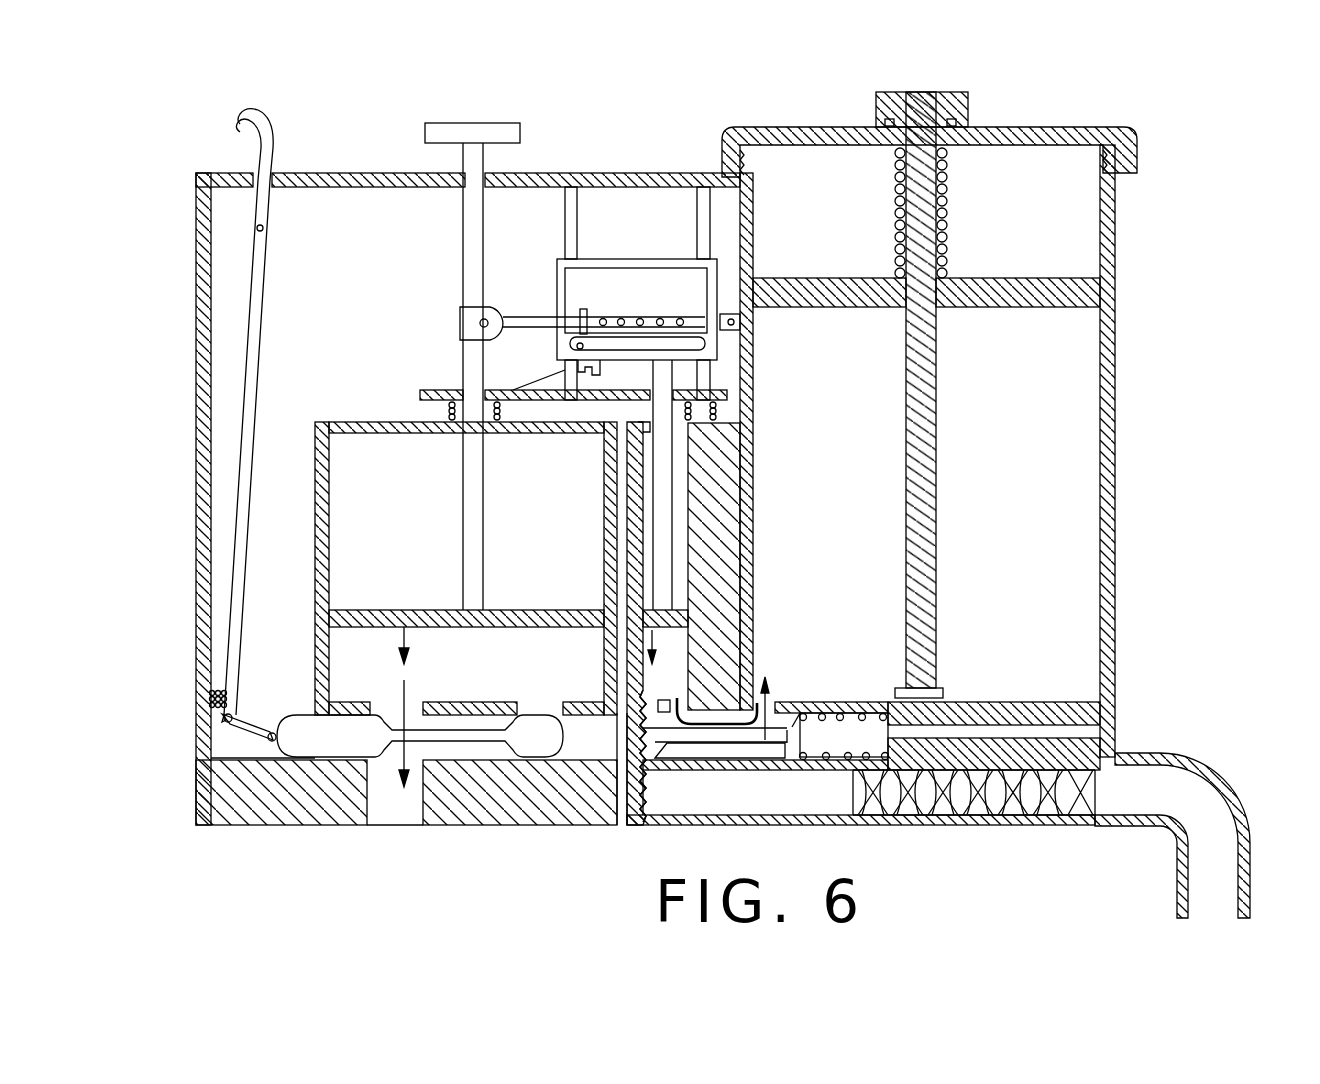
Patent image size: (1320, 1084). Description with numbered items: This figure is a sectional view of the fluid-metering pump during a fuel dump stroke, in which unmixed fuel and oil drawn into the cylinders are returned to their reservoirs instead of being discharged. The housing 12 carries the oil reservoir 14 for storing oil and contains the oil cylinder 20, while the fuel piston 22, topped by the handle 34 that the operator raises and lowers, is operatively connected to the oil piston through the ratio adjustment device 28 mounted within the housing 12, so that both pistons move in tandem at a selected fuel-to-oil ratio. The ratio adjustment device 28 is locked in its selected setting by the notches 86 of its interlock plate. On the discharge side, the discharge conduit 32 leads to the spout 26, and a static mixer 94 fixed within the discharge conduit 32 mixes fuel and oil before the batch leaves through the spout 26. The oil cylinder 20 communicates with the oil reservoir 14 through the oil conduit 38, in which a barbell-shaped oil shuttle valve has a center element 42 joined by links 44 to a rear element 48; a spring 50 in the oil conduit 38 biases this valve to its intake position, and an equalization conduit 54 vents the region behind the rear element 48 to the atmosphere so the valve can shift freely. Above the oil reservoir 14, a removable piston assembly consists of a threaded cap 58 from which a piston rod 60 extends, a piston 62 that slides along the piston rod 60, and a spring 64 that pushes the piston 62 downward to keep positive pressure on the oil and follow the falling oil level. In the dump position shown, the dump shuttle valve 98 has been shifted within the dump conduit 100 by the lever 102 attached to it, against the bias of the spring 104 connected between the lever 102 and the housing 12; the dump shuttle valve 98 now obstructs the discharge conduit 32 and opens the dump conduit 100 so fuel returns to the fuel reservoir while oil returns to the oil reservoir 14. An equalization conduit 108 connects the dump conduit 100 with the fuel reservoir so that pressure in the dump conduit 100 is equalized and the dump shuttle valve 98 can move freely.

The housing 12 is at (553, 540).
The oil reservoir 14 is at (438, 614).
The oil cylinder 20 is at (682, 677).
The fuel piston 22 is at (472, 495).
The spout 26 is at (1205, 905).
The ratio adjustment device 28 is at (612, 258).
The discharge conduit 32 is at (786, 802).
The handle 34 is at (512, 124).
The oil conduit 38 is at (732, 762).
The center element 42 is at (666, 746).
The links 44 is at (768, 698).
The rear element 48 is at (792, 727).
The spring 50 is at (845, 700).
The equalization conduit 54 is at (1100, 730).
The threaded cap 58 is at (1057, 130).
The piston rod 60 is at (948, 228).
The piston 62 is at (845, 278).
The spring 64 is at (897, 232).
The notches 86 is at (774, 692).
The static mixer 94 is at (978, 812).
The dump shuttle valve 98 is at (348, 745).
The dump conduit 100 is at (418, 810).
The lever 102 is at (278, 108).
The spring 104 is at (215, 695).
The equalization conduit 108 is at (620, 825).